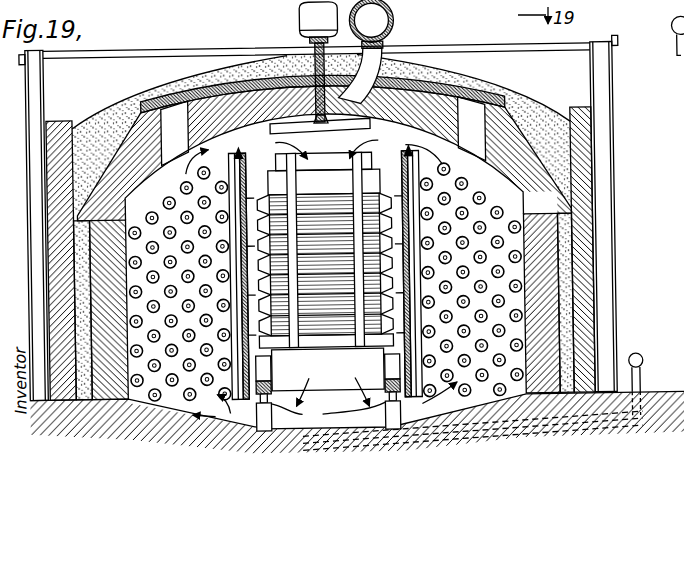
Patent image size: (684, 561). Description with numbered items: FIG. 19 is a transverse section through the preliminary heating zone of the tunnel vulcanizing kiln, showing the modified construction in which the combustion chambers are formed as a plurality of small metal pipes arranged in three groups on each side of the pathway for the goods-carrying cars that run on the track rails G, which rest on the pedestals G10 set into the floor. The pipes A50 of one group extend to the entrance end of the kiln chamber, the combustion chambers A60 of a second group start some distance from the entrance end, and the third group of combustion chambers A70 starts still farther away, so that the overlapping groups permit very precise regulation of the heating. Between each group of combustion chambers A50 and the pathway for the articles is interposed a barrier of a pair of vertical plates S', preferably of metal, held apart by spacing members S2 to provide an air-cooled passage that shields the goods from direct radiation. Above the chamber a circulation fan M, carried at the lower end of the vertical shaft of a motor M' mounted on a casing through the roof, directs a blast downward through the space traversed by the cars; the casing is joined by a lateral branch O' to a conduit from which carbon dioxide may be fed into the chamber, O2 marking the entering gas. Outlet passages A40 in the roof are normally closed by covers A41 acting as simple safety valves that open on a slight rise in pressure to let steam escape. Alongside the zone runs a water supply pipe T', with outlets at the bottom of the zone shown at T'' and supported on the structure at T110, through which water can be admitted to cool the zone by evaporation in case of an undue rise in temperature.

The motor M' is at (315, 67).
The lateral branch O' is at (407, 21).
The pipe inlet collar O2 is at (400, 46).
The outlet passage A40 is at (172, 122).
The cover A41 is at (183, 95).
The combustion chamber pipes A50 is at (245, 151).
The combustion chambers A60 is at (188, 398).
The combustion chambers A70 is at (137, 283).
The fan M is at (324, 236).
The vertical plates S' is at (325, 273).
The spacing members S2 is at (270, 356).
The track rails G is at (328, 413).
The pedestal G10 is at (270, 417).
The water supply pipe T' is at (554, 446).
The track wheel T'' is at (643, 368).
The upper track wheel T110 is at (676, 31).